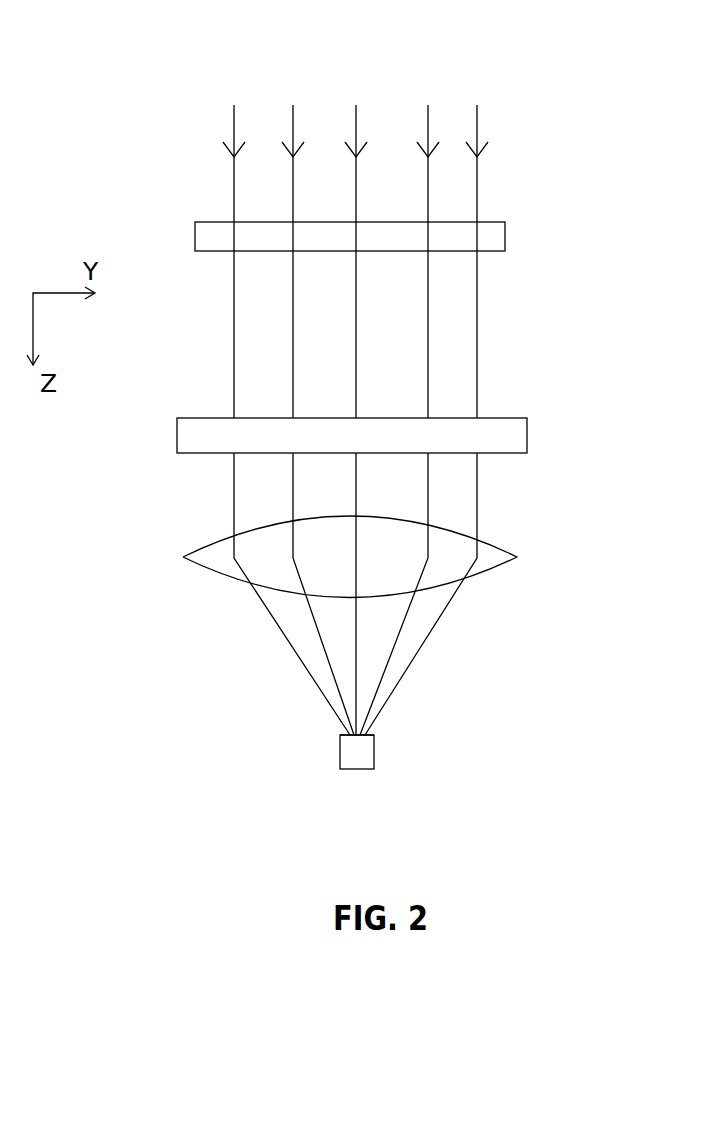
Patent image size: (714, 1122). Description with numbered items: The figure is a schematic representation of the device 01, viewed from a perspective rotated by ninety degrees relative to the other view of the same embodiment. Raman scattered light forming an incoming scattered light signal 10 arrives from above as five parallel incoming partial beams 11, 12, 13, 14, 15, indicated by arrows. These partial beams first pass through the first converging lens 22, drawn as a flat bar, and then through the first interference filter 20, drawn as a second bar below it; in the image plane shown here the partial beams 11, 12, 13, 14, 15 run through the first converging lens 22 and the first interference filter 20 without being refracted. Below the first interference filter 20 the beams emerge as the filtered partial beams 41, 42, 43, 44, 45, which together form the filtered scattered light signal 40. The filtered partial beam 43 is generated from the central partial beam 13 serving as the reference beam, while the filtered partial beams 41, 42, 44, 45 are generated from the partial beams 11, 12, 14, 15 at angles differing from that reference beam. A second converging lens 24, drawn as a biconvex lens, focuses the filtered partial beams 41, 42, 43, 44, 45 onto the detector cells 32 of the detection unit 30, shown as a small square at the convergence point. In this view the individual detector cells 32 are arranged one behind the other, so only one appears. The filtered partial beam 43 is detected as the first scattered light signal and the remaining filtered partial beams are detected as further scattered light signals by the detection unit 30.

The device 01 is at (133, 140).
The incoming scattered light signal 10 is at (478, 117).
The partial beam 11 is at (234, 185).
The partial beam 12 is at (293, 177).
The partial beam 13 is at (356, 177).
The partial beam 14 is at (428, 177).
The partial beam 15 is at (478, 175).
The first converging lens 22 is at (490, 222).
The first interference filter 20 is at (512, 418).
The second converging lens 24 is at (500, 540).
The filtered scattered light signal 40 is at (372, 594).
The filtered partial beam 41 is at (233, 505).
The filtered partial beam 42 is at (292, 507).
The filtered partial beam 43 is at (356, 507).
The filtered partial beam 44 is at (427, 507).
The filtered partial beam 45 is at (477, 520).
The detection unit 30 is at (357, 770).
The detector cells 32 is at (370, 750).